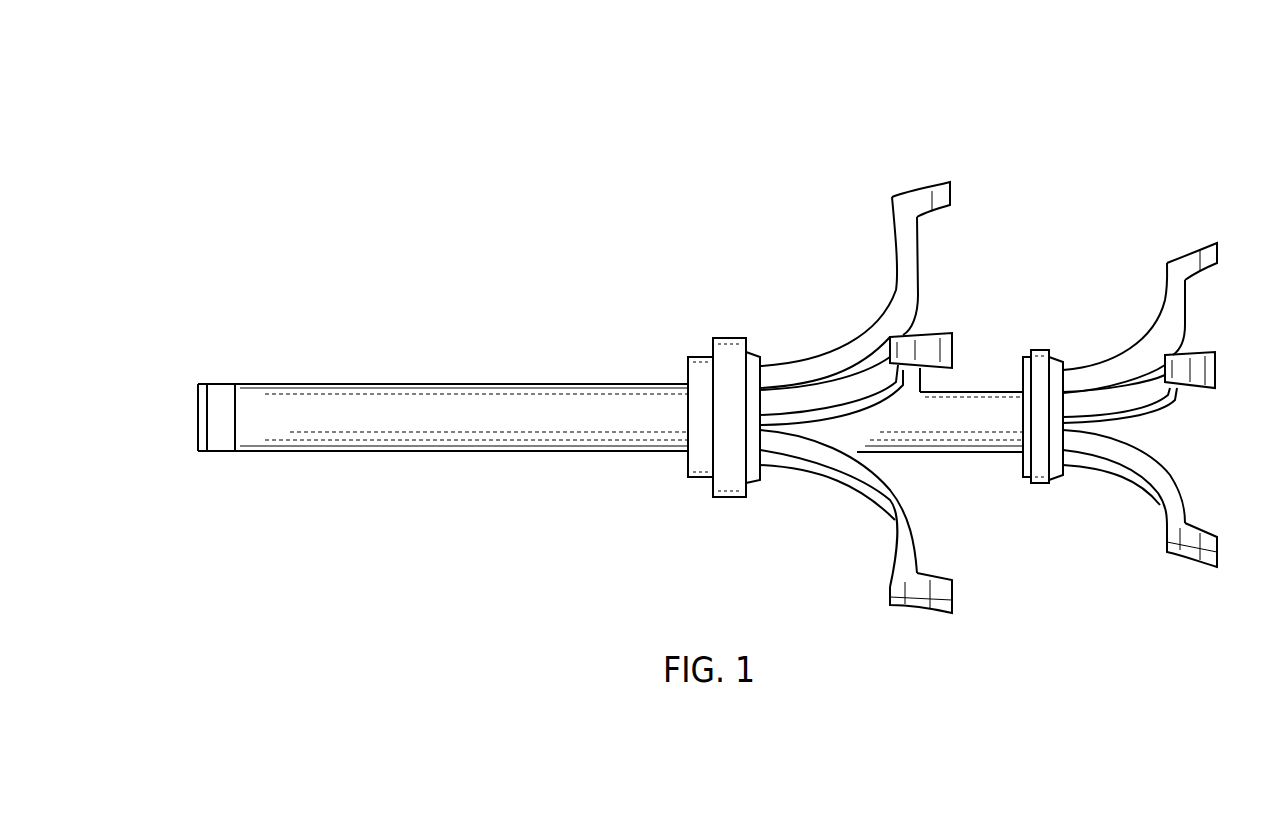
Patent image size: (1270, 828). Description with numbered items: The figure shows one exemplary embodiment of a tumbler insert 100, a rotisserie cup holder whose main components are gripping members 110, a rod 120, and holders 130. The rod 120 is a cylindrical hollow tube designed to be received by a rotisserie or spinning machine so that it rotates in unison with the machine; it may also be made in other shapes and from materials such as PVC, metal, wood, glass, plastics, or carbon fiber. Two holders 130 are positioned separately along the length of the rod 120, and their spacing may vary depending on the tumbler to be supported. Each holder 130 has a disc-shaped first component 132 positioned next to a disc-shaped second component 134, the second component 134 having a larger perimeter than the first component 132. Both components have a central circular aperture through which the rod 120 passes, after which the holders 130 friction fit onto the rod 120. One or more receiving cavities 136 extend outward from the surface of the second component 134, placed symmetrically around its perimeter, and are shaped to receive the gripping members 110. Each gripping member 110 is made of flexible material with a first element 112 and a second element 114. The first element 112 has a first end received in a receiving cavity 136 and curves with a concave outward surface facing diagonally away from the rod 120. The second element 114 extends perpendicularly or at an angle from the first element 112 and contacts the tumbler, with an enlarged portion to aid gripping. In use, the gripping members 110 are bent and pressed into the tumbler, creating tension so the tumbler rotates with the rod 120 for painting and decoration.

The tumbler insert 100 is at (510, 178).
The gripping members 110 is at (883, 215).
The first element 112 is at (892, 273).
The second element 114 is at (927, 172).
The rod 120 is at (480, 365).
The holders 130 is at (697, 338).
The first component 132 is at (672, 462).
The second component 134 is at (717, 512).
The receiving cavities 136 is at (755, 335).